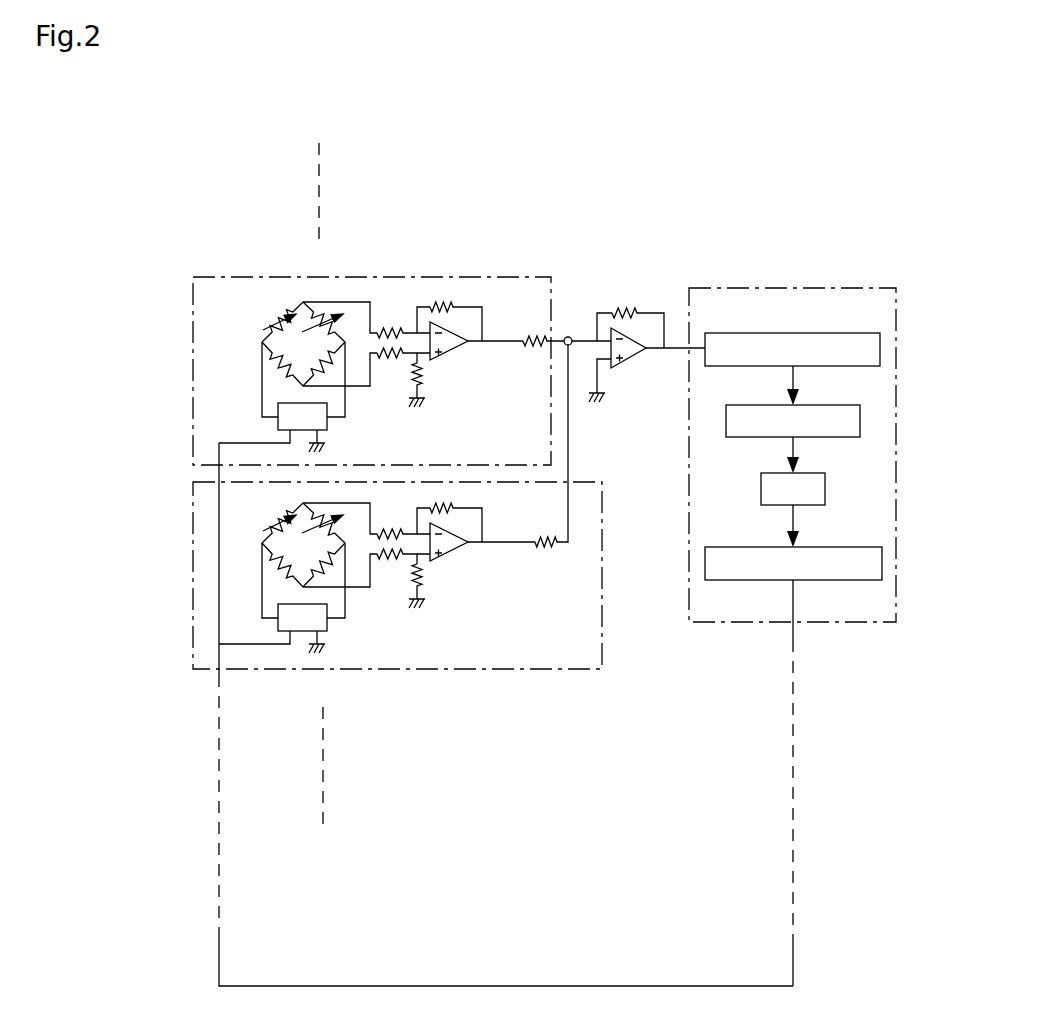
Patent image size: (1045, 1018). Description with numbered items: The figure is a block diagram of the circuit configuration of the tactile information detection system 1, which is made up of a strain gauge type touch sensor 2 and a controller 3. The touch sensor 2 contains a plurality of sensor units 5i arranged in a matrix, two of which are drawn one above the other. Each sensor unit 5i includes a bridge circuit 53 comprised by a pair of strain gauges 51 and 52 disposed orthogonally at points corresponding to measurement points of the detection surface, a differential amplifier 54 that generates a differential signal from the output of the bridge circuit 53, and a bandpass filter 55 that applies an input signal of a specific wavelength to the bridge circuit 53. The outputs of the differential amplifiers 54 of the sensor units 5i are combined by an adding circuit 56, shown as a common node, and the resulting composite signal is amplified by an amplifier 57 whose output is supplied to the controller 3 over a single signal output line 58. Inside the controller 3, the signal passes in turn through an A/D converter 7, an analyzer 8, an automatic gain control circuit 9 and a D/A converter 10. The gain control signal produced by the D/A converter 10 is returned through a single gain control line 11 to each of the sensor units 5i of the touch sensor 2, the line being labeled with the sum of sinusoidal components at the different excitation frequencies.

The tactile information detection system 1 is at (595, 156).
The touch sensor 2 is at (434, 260).
The controller 3 is at (797, 268).
The sensor unit 5i is at (192, 592).
The A/D converter 7 is at (880, 348).
The analyzer 8 is at (860, 422).
The automatic gain control circuit 9 is at (825, 490).
The D/A converter 10 is at (882, 565).
The gain control line 11 is at (793, 655).
The strain gauge 51 is at (266, 514).
The strain gauge 52 is at (353, 514).
The bridge circuit 53 is at (272, 536).
The differential amplifier 54 is at (457, 555).
The bandpass filter 55 is at (336, 631).
The adding circuit 56 is at (568, 336).
The amplifier 57 is at (645, 312).
The signal output line 58 is at (677, 349).